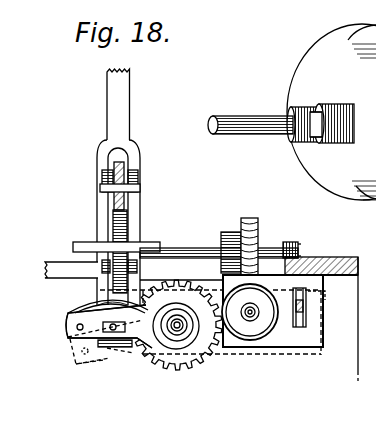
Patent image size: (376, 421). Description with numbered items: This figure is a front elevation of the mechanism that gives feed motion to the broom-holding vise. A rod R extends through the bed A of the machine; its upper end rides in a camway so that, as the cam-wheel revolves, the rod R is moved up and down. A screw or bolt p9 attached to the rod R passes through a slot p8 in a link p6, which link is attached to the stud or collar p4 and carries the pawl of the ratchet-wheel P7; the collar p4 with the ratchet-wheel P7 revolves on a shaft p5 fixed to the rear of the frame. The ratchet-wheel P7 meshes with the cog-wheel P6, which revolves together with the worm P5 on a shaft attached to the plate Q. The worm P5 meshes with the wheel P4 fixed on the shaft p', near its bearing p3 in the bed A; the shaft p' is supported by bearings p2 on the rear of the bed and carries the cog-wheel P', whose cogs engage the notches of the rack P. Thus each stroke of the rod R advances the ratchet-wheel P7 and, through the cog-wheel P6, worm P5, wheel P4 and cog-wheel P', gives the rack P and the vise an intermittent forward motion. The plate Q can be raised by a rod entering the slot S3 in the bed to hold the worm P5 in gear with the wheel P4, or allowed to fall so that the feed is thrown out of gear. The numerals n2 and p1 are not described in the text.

The bed A is at (250, 114).
The rod R is at (129, 105).
The rack P is at (137, 221).
The cog-wheel P' is at (130, 222).
The nuts n2 is at (133, 204).
The shaft p' is at (171, 255).
The wheel P4 is at (256, 223).
The bearing p3 is at (294, 249).
The plate Q is at (249, 320).
The slot S3 is at (310, 303).
The worm P5 is at (250, 312).
The cog-wheel P6 is at (258, 346).
The ratchet-wheel P7 is at (177, 325).
The collar p4 is at (190, 325).
The link p6 is at (132, 326).
The screw or bolt p9 is at (112, 328).
The bearings p2 is at (108, 301).
The pawl tip p1 is at (108, 307).
The slot p8 is at (122, 347).
The shaft p5 is at (96, 343).